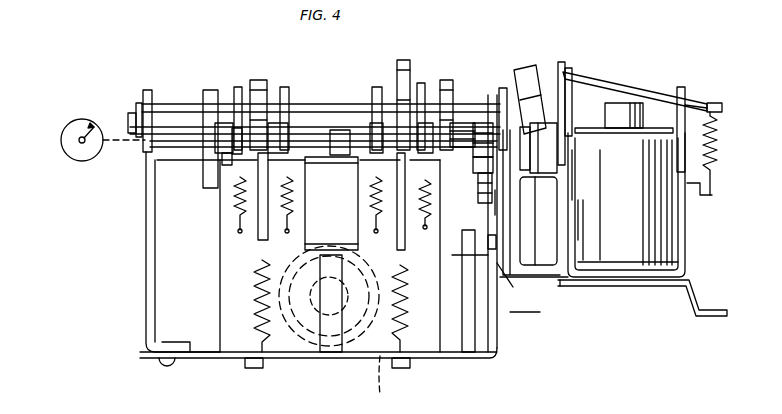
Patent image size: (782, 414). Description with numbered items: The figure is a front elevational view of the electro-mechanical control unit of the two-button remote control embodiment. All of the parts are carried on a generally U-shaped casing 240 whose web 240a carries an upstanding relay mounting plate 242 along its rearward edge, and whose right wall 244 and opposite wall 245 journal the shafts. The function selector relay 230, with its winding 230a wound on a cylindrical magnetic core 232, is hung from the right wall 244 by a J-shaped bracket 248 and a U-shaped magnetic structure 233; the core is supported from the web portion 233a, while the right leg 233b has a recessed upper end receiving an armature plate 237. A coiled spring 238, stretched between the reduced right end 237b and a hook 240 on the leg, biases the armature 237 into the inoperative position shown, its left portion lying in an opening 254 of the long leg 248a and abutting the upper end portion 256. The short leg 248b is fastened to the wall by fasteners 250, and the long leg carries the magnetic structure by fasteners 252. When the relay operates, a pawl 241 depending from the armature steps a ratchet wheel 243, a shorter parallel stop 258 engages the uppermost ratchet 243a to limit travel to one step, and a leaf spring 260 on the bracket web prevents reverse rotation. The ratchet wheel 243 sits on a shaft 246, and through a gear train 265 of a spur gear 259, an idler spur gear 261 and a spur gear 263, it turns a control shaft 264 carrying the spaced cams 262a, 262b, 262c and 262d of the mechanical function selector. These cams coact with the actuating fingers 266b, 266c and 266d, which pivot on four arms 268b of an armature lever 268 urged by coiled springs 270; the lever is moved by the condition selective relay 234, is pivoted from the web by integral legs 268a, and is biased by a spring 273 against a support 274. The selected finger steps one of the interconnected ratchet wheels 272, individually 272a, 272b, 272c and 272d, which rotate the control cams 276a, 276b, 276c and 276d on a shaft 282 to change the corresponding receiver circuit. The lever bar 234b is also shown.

The function selector relay 230 is at (677, 217).
The winding 230a is at (644, 265).
The mechanical function selector 232 is at (190, 150).
The U-shaped magnetic structure 233 is at (686, 258).
The web portion 233a is at (586, 286).
The right leg 233b is at (692, 105).
The condition selective relay 234 is at (380, 360).
The lever bar 234b is at (681, 88).
The armature plate 237 is at (626, 88).
The reduced right end 237b is at (723, 108).
The coiled spring 238 is at (718, 150).
The U-shaped casing 240 is at (472, 360).
The web 240a is at (357, 322).
The pawl 241 is at (505, 100).
The relay mounting plate 242 is at (467, 284).
The ratchet wheel 243 is at (570, 214).
The ratchet 243a is at (572, 198).
The right wall 244 is at (497, 330).
The casing wall 245 is at (146, 308).
The shaft 246 is at (545, 150).
The J-shaped bracket 248 is at (536, 280).
The long leg 248a is at (570, 230).
The short leg 248b is at (492, 246).
The fasteners 250 is at (470, 252).
The fasteners 252 is at (575, 148).
The opening 254 is at (570, 70).
The upper end portion 256 is at (560, 62).
The stop 258 is at (530, 80).
The spur gear 259 is at (495, 205).
The leaf spring 260 is at (573, 250).
The idler spur gear 261 is at (478, 175).
The cam 262a is at (427, 224).
The cam 262b is at (376, 176).
The cam 262c is at (292, 187).
The cam 262d is at (235, 190).
The spur gear 263 is at (478, 123).
The control shaft 264 is at (150, 147).
The gear train 265 is at (480, 195).
The volume control actuating finger 266b is at (352, 140).
The fine tuning actuating finger 266c is at (316, 125).
The channel selector actuating finger 266d is at (232, 200).
The armature lever 268 is at (218, 300).
The integral legs 268a is at (252, 366).
The arms 268b is at (358, 246).
The coiled springs 270 is at (240, 224).
The ratchet wheels 272 is at (72, 152).
The ratchet wheel 272a is at (423, 83).
The ratchet wheel 272b is at (377, 87).
The ratchet wheel 272c is at (284, 87).
The ratchet wheel 272d is at (238, 87).
The spring 273 is at (256, 310).
The support 274 is at (328, 332).
The control cam 276a is at (447, 80).
The volume control cam 276b is at (402, 60).
The control cam 276c is at (258, 80).
The control cam 276d is at (210, 92).
The shaft 282 is at (128, 116).